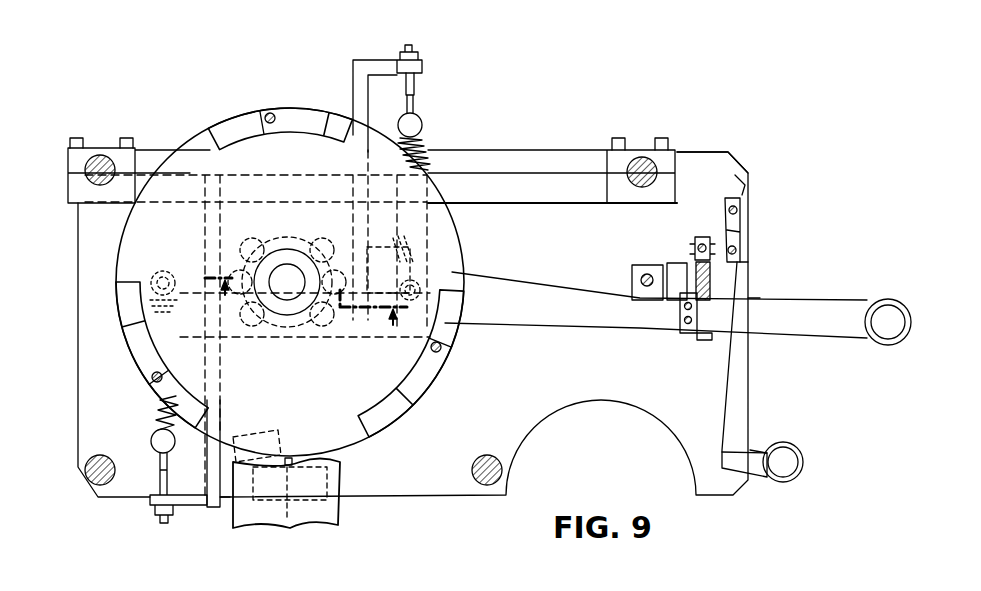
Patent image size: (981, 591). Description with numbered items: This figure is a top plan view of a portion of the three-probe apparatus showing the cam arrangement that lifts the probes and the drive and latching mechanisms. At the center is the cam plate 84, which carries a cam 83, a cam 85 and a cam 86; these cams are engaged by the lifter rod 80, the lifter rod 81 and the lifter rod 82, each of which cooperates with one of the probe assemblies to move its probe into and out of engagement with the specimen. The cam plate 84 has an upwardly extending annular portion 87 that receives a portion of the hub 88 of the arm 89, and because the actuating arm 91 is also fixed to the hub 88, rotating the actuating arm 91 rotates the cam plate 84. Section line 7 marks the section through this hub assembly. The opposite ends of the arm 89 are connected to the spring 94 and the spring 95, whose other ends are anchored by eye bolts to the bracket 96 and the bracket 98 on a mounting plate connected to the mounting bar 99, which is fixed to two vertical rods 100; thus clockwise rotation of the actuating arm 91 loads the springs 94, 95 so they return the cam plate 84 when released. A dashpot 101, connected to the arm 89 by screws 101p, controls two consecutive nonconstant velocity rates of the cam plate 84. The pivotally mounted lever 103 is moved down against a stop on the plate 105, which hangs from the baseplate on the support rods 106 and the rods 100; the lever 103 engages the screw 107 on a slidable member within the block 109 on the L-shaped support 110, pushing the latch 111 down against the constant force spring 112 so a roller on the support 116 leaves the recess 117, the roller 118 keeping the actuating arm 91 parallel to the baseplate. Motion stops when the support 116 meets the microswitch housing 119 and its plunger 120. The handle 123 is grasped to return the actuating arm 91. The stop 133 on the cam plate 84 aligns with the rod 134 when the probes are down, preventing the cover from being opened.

The section line 7- 7 is at (306, 317).
The lifter rod 80 is at (152, 381).
The lifter rod 81 is at (273, 113).
The lifter rod 82 is at (444, 350).
The cam 83 is at (136, 352).
The cam plate 84 is at (413, 302).
The cam 85 is at (233, 118).
The cam 86 is at (405, 388).
The annular portion 87 is at (283, 305).
The hub 88 is at (300, 295).
The arm 89 is at (175, 266).
The actuating arm 91 is at (528, 291).
The spring 94 is at (152, 420).
The spring 95 is at (428, 140).
The bracket 96 is at (207, 512).
The bracket 98 is at (356, 80).
The mounting bar 99 is at (515, 203).
The vertical rods 100 is at (100, 160).
The dashpot 101 is at (248, 242).
The screws 101p is at (393, 268).
The lever 103 is at (728, 395).
The plate 105 is at (500, 158).
The support rods 106 is at (98, 483).
The screw 107 is at (748, 295).
The block 109 is at (677, 270).
The L-shaped support 110 is at (645, 265).
The latch 111 is at (704, 337).
The constant force spring 112 is at (700, 237).
The support 116 is at (679, 312).
The recess 117 is at (712, 273).
The roller 118 is at (708, 300).
The microswitch housing 119 is at (738, 155).
The plunger 120 is at (745, 182).
The handle 123 is at (882, 343).
The stop 133 is at (250, 432).
The rod 134 is at (296, 518).